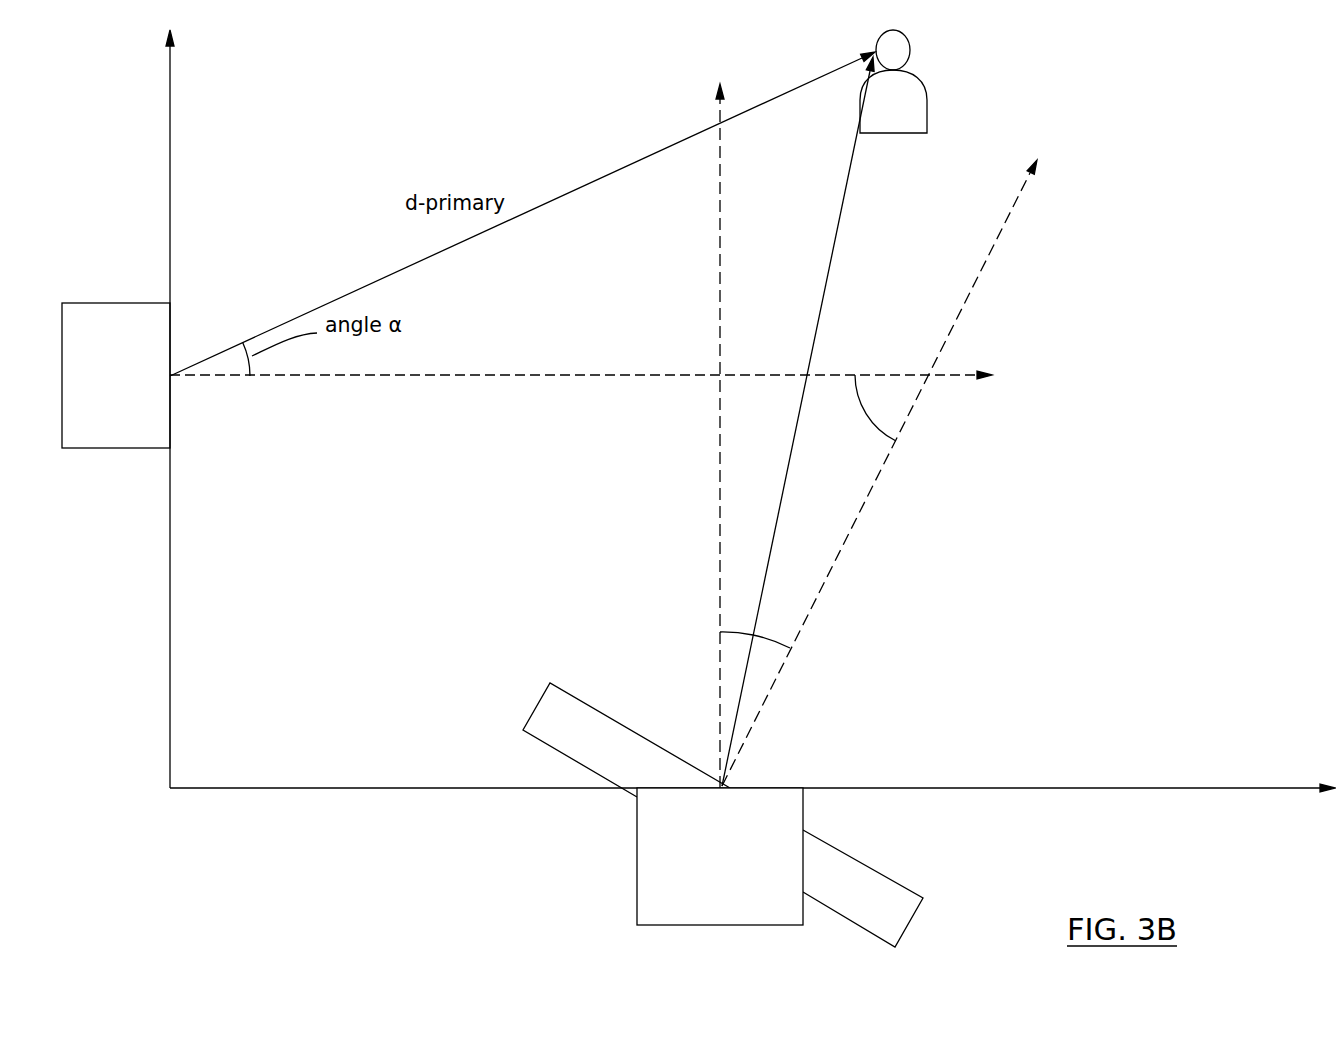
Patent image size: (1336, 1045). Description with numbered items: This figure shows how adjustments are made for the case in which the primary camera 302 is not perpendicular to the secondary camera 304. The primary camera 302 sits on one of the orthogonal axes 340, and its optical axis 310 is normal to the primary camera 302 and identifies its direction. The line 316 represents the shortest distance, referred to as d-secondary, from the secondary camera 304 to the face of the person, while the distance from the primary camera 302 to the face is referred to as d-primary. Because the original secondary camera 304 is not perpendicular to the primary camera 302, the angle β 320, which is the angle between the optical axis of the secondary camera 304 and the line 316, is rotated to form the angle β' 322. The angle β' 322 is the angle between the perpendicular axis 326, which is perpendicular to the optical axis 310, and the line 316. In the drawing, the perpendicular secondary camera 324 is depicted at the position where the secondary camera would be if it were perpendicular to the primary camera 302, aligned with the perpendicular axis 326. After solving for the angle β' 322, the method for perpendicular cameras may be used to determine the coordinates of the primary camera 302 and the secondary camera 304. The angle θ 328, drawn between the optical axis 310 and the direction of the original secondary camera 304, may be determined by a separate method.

The primary camera 302 is at (95, 416).
The secondary camera 304 is at (523, 730).
The optical axis 310 is at (952, 374).
The line 316 is at (838, 231).
The angle β 320 is at (772, 641).
The angle β' 322 is at (737, 633).
The perpendicular secondary camera 324 is at (700, 912).
The perpendicular axis 326 is at (718, 424).
The angle θ 328 is at (872, 428).
The orthogonal axis 340 is at (170, 97).